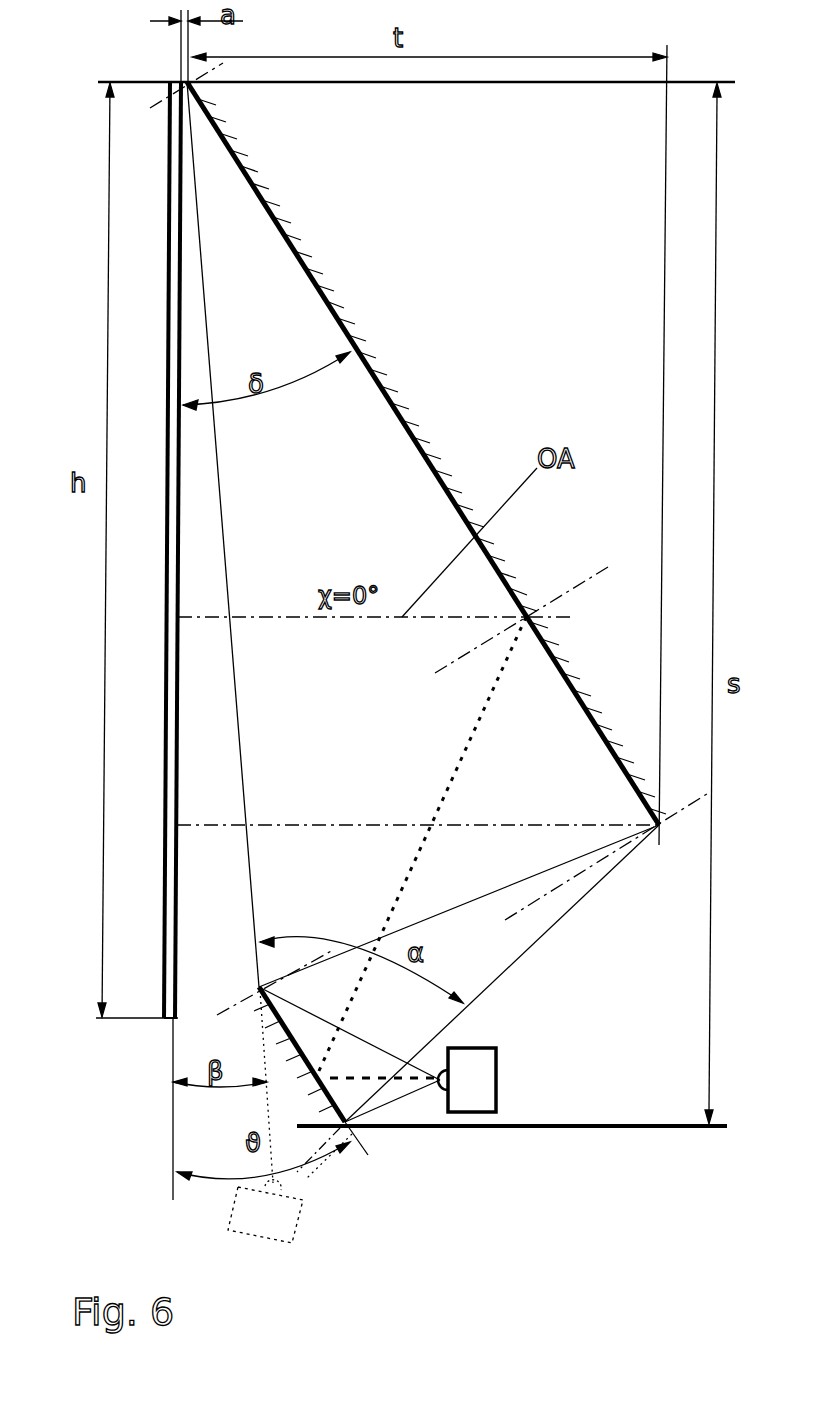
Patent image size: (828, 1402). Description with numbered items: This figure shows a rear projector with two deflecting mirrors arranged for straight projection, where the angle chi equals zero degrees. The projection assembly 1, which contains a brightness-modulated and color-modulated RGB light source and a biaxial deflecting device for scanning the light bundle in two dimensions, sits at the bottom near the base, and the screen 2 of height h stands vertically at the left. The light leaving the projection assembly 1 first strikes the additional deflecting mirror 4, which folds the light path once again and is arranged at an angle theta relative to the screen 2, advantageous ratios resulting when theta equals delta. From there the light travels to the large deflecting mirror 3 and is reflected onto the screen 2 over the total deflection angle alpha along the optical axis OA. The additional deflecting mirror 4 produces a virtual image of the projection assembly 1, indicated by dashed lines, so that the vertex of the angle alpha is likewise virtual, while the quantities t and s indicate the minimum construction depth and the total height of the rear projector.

The projection assembly 1 is at (497, 1062).
The screen 2 is at (165, 665).
The deflecting mirror 3 is at (383, 390).
The additional deflecting mirror 4 is at (334, 1105).